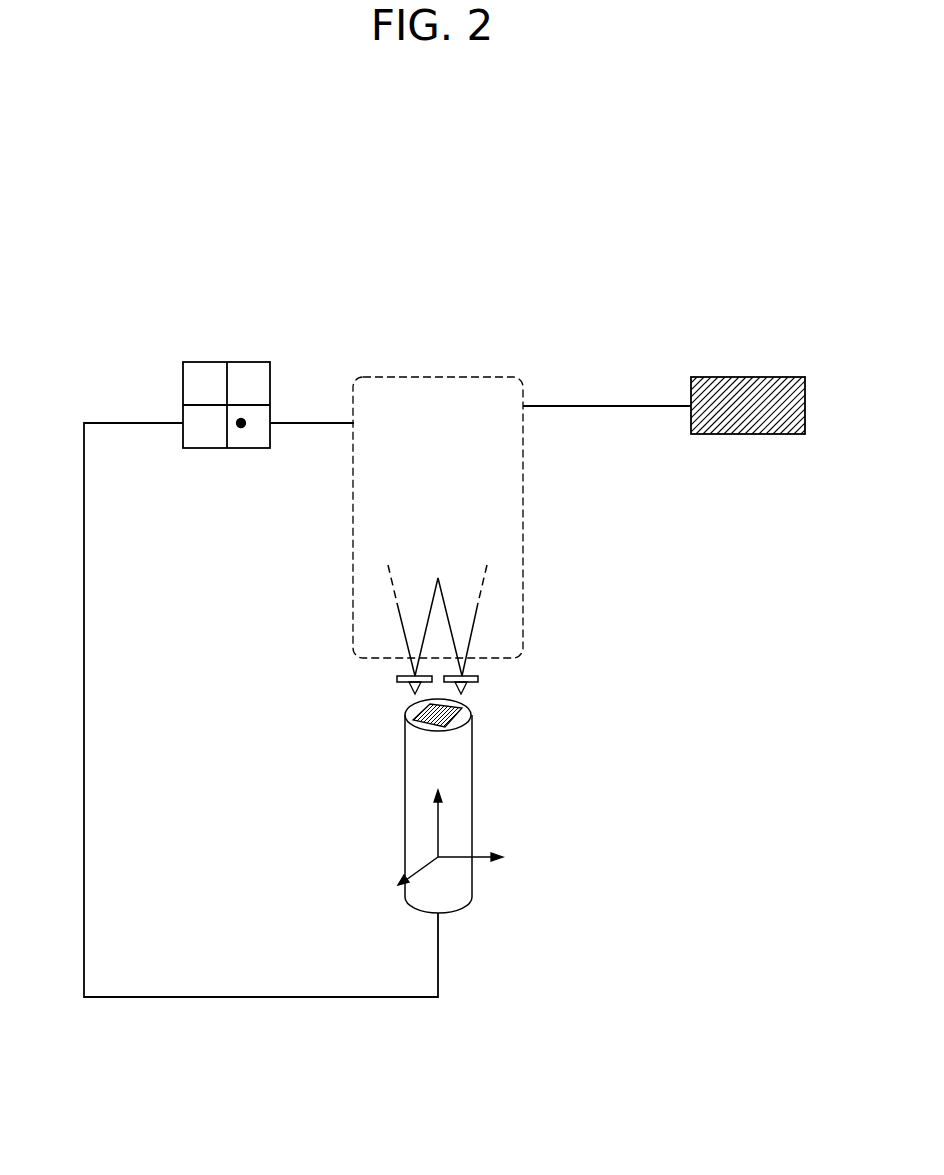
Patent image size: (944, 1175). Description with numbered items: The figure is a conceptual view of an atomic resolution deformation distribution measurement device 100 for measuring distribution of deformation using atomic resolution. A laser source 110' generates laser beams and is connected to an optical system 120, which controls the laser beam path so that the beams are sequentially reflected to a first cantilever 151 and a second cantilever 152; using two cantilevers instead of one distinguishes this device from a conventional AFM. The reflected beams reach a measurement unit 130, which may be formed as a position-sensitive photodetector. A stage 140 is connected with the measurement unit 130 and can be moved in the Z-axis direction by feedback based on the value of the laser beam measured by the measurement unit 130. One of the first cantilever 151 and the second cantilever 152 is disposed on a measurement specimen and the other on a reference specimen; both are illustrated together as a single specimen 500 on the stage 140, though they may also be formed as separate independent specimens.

The atomic resolution deformation distribution measurement device 100 is at (555, 238).
The laser source 110' is at (749, 378).
The optical system 120 is at (436, 388).
The measurement unit 130 is at (247, 370).
The stage 140 is at (462, 772).
The first cantilever 151 is at (467, 688).
The second cantilever 152 is at (412, 687).
The specimen 500 is at (413, 713).